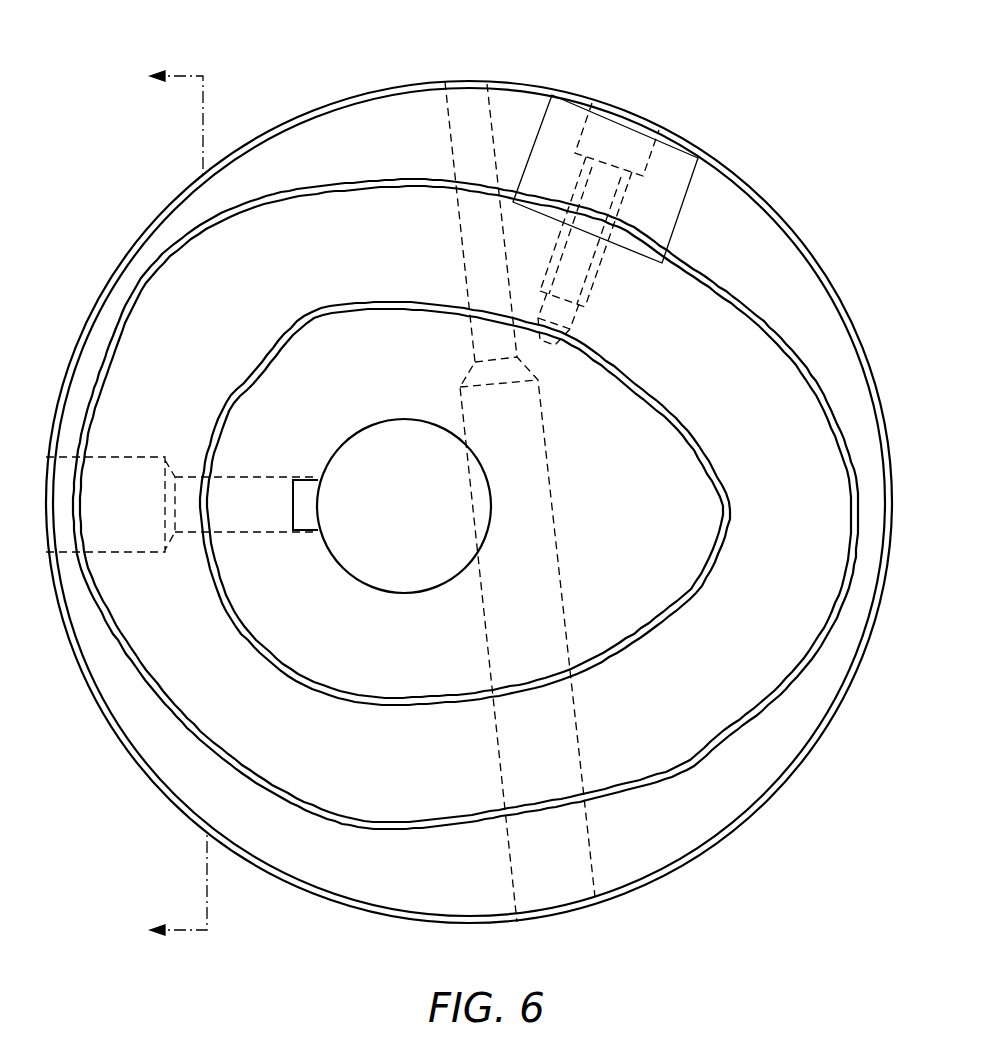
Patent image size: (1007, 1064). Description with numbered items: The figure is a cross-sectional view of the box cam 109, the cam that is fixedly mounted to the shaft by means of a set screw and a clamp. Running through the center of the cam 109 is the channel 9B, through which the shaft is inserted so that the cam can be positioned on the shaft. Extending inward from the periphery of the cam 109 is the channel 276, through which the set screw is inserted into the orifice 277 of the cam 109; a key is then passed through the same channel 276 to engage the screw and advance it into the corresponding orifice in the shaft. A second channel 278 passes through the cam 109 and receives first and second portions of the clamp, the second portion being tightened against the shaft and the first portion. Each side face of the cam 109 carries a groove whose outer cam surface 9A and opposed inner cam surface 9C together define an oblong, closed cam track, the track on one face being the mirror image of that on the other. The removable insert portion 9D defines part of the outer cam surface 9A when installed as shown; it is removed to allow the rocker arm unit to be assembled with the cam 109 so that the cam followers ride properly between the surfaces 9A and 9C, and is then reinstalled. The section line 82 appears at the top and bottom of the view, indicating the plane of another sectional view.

The box cam 109 is at (342, 132).
The outer cam surface 9A is at (262, 211).
The inner cam surface 9C is at (356, 308).
The channel 9B is at (364, 425).
The removable insert portion 9D is at (567, 112).
The section line 82 is at (160, 504).
The channel 276 is at (110, 553).
The orifice 277 is at (293, 493).
The channel 278 is at (597, 885).